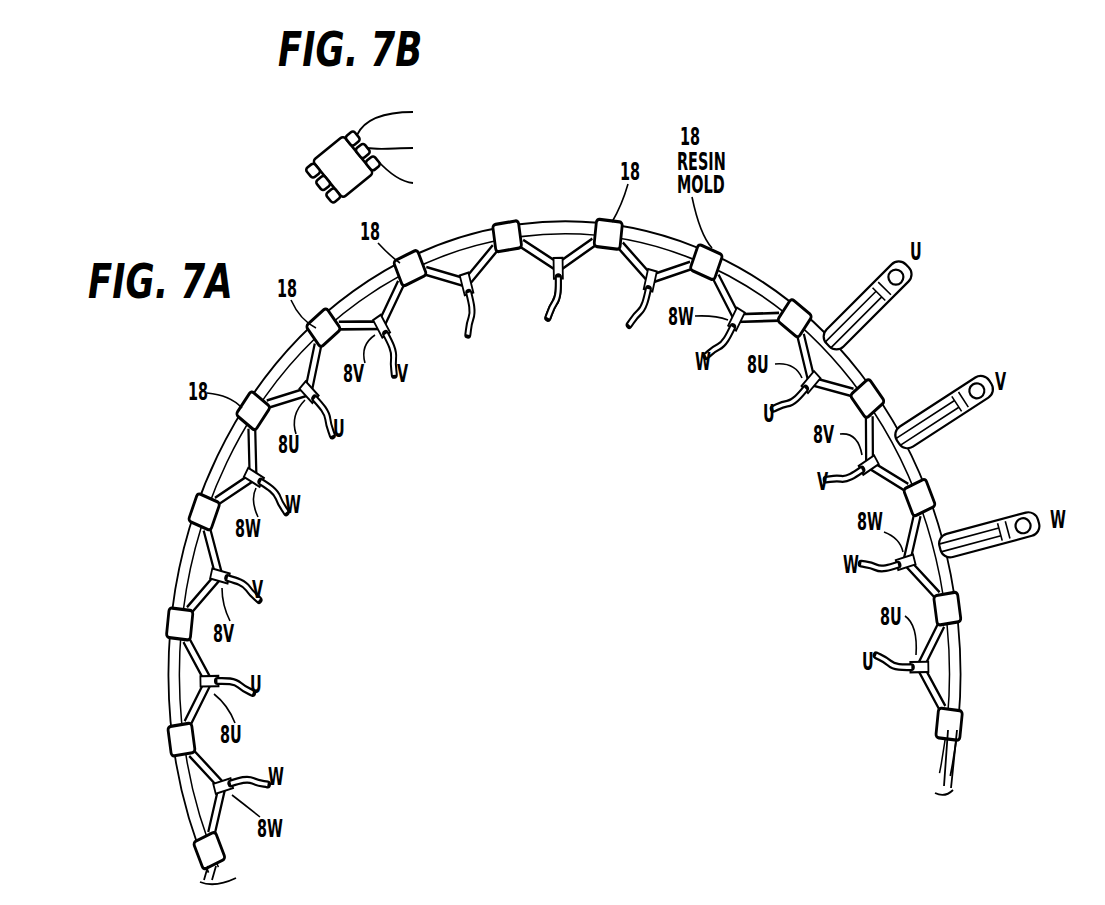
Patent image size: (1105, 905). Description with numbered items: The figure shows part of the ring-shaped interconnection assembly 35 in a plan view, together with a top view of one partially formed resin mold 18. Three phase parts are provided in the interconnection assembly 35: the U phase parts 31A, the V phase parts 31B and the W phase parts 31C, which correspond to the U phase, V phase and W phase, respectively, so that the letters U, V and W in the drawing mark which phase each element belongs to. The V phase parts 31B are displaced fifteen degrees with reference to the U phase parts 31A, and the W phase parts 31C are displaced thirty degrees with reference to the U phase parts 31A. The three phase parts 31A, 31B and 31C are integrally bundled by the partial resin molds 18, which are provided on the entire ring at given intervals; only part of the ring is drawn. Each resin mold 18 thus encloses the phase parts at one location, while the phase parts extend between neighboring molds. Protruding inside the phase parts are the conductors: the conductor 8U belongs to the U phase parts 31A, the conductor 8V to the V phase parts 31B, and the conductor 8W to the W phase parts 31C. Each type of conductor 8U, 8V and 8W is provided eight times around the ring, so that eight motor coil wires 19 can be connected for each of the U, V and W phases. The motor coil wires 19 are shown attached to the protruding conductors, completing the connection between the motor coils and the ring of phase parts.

In FIG. 7A, the resin mold 18 is at (506, 226).
In FIG. 7B, the resin mold 18 is at (332, 150).
In FIG. 7A, the motor coil wire 19 is at (562, 293).
In FIG. 7A, the interconnection assembly 35 is at (502, 442).
In FIG. 7A, the U phase parts 31A is at (848, 300).
In FIG. 7B, the U phase parts 31A is at (413, 176).
In FIG. 7A, the V phase parts 31B is at (928, 395).
In FIG. 7B, the V phase parts 31B is at (408, 145).
In FIG. 7A, the W phase parts 31C is at (975, 518).
In FIG. 7B, the W phase parts 31C is at (403, 116).
In FIG. 7A, the conductor of the U phase parts 8U is at (545, 267).
In FIG. 7A, the conductor of the V phase parts 8V is at (640, 276).
In FIG. 7A, the conductor of the W phase parts 8W is at (460, 300).
In FIG. 7A, the U phase U is at (553, 307).
In FIG. 7A, the V phase V is at (638, 316).
In FIG. 7A, the W phase W is at (472, 319).